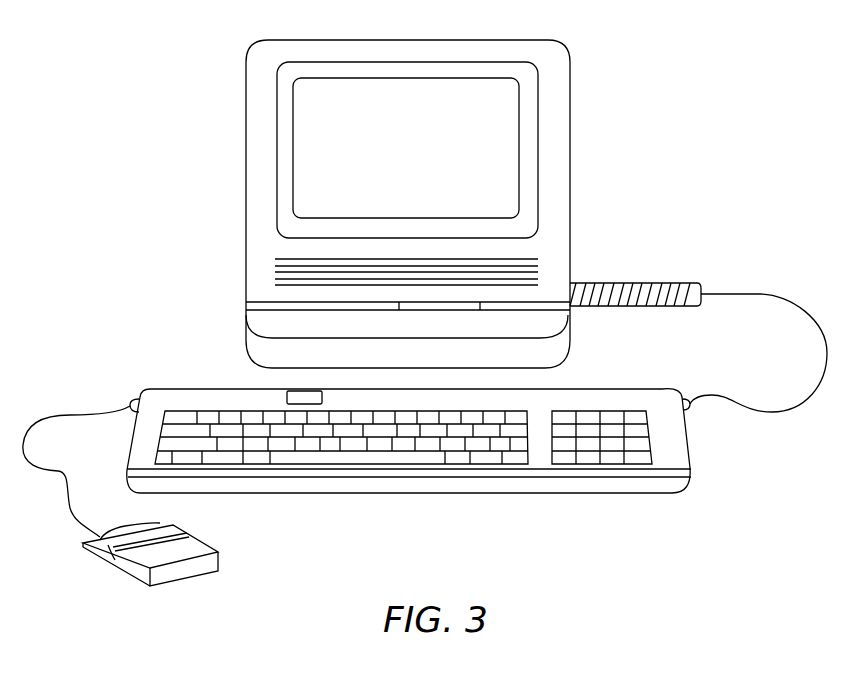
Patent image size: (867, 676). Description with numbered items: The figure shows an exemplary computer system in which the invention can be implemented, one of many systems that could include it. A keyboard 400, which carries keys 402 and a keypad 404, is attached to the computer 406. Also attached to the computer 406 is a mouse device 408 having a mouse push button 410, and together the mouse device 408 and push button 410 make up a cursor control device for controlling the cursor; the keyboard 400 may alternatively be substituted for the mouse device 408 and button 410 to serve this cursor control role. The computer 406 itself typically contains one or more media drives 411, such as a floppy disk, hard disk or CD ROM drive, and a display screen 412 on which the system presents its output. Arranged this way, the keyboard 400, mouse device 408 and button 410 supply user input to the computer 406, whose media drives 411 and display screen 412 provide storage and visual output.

The keyboard 400 is at (680, 452).
The keys 402 is at (428, 457).
The keypad 404 is at (617, 460).
The computer 406 is at (570, 105).
The mouse device 408 is at (200, 571).
The mouse push button 410 is at (110, 562).
The media drives 411 is at (434, 311).
The display screen 412 is at (452, 97).